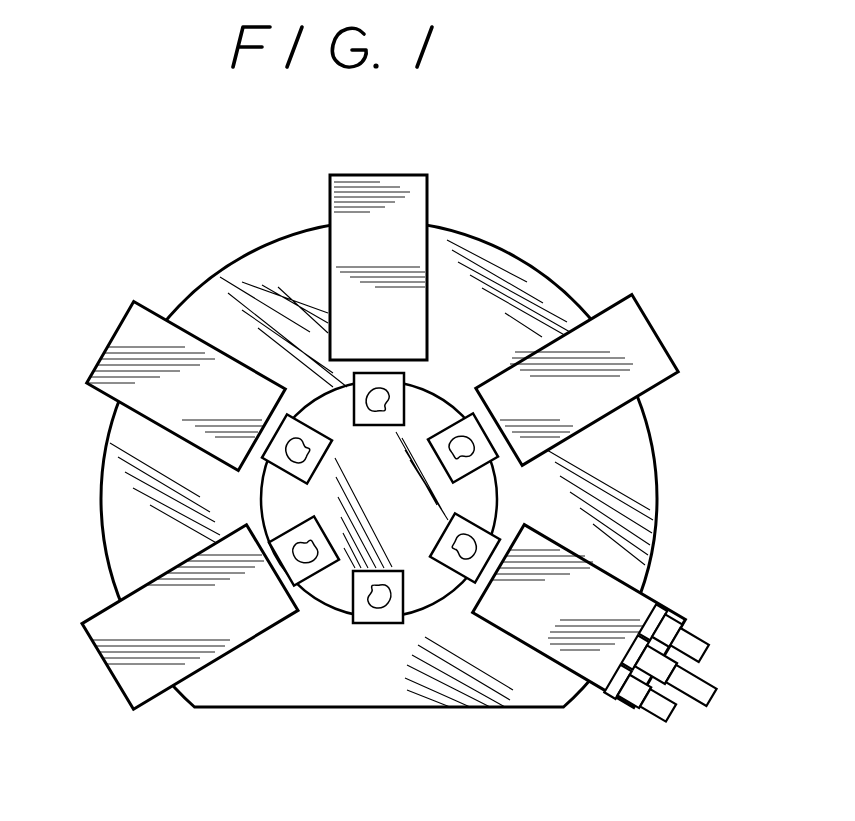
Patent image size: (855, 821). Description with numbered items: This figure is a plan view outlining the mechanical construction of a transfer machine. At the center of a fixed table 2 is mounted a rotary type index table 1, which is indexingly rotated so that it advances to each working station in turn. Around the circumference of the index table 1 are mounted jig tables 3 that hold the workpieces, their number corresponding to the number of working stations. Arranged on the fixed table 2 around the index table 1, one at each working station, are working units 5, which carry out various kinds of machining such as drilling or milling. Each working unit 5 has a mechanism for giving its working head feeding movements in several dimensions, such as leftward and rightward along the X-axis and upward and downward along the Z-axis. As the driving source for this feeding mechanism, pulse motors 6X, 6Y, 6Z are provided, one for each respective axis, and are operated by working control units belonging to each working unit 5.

The index table 1 is at (330, 583).
The fixed table 2 is at (300, 675).
The jig table 3 is at (375, 408).
The working unit 5 is at (410, 183).
The pulse motor 6X is at (658, 690).
The pulse motor 6Y is at (695, 682).
The pulse motor 6Z is at (687, 642).